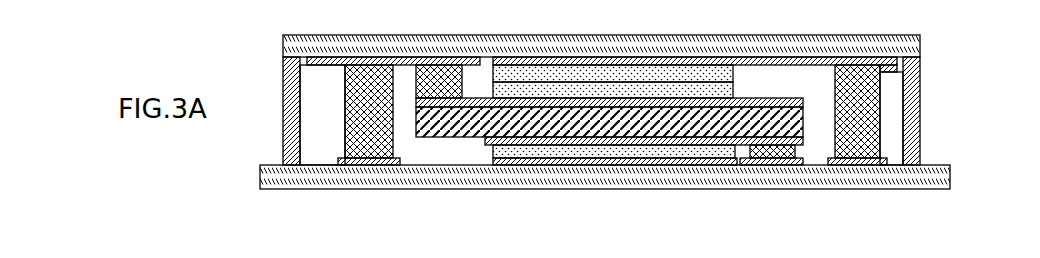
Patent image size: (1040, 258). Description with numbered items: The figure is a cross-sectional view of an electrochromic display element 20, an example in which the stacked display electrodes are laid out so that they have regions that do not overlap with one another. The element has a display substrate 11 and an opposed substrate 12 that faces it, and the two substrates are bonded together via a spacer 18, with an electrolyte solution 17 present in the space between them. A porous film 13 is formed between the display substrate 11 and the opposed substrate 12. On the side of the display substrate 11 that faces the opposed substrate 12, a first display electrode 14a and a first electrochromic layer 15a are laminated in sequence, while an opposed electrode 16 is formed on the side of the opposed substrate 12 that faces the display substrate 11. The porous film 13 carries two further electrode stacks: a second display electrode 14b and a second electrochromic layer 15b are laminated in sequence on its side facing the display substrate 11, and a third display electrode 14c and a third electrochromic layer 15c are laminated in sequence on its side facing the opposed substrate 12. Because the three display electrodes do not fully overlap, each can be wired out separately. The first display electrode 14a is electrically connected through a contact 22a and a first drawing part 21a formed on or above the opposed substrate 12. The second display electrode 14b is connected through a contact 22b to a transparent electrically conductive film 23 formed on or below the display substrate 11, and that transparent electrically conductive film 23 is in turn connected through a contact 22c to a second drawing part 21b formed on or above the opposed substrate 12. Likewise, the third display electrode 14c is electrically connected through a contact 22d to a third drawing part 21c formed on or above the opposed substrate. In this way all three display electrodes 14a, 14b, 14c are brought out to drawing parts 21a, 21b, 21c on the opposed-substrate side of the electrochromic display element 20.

The electrochromic display element 20 is at (838, 20).
The display substrate 11 is at (920, 50).
The opposed substrate 12 is at (950, 178).
The porous film 13 is at (803, 128).
The first display electrode 14a is at (893, 67).
The second display electrode 14b is at (787, 103).
The third display electrode 14c is at (478, 141).
The first electrochromic layer 15a is at (733, 77).
The second electrochromic layer 15b is at (733, 89).
The third electrochromic layer 15c is at (497, 152).
The opposed electrode 16 is at (617, 165).
The electrolyte solution 17 is at (893, 90).
The spacer 18 is at (920, 108).
The first drawing part 21a is at (855, 165).
The second drawing part 21b is at (369, 163).
The third drawing part 21c is at (768, 165).
The contact 22a is at (873, 127).
The contact 22b is at (440, 63).
The contact 22c is at (345, 123).
The contact 22d is at (746, 151).
The transparent electrically conductive film 23 is at (321, 65).